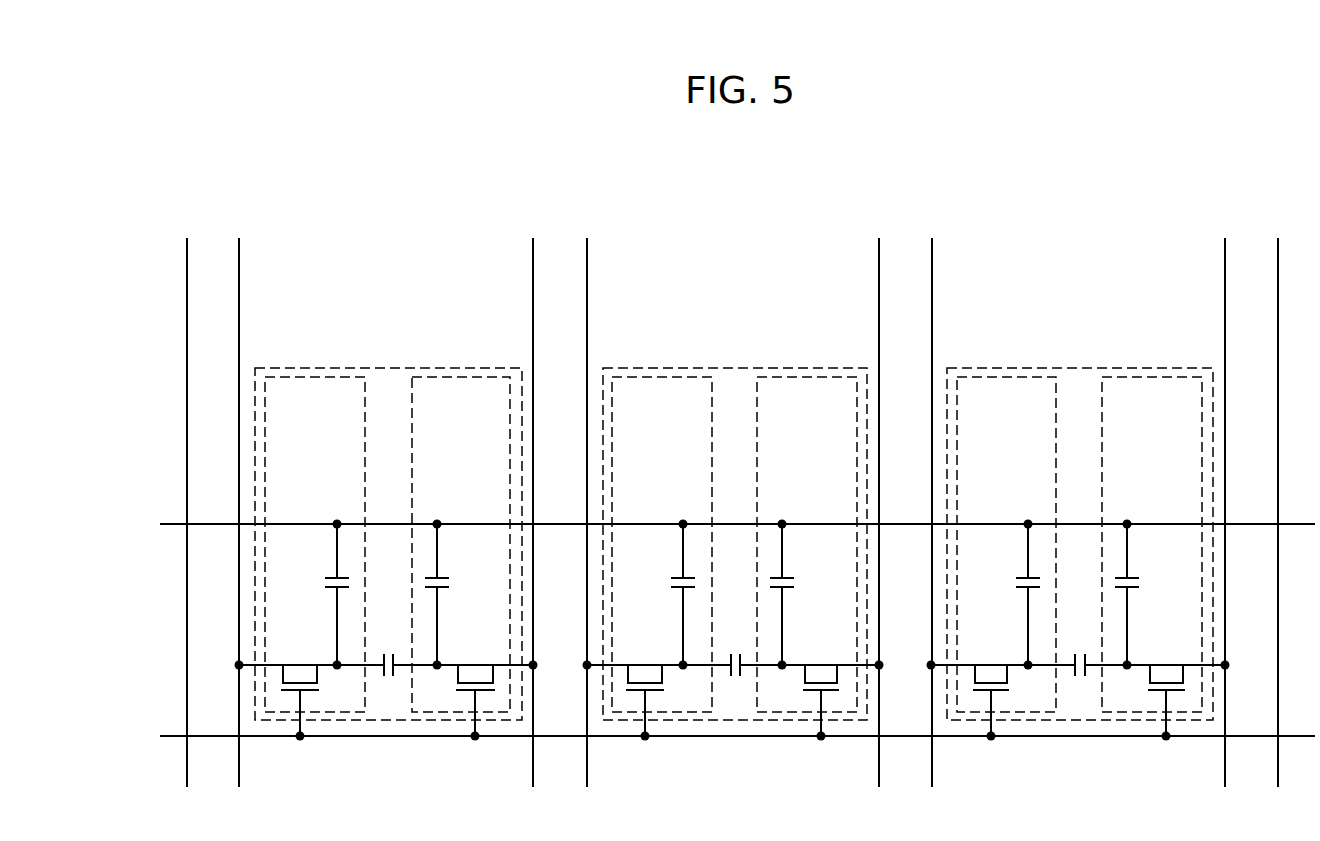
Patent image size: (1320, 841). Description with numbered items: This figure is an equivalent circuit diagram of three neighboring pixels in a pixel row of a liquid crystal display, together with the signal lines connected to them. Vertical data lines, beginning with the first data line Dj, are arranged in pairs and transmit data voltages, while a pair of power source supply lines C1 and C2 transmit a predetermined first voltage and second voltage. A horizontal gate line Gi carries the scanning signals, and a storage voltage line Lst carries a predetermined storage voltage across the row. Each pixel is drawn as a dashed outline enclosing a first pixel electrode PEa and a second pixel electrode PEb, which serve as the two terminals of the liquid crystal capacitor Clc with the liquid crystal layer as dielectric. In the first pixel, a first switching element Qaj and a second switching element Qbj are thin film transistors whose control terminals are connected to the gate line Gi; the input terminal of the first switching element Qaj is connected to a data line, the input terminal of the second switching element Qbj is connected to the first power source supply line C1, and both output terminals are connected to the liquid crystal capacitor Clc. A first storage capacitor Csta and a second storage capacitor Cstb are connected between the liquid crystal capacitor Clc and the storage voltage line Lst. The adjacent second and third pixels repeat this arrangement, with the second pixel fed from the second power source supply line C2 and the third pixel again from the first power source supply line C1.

The first data line Dj is at (187, 495).
The first power source supply line C1 is at (880, 495).
The second power source supply line C2 is at (932, 495).
The storage voltage line Lst is at (717, 526).
The gate line Gi is at (722, 737).
The first pixel electrode PEa is at (992, 377).
The second pixel electrode PEb is at (1164, 377).
The first storage capacitor Csta is at (661, 594).
The second storage capacitor Cstb is at (803, 594).
The liquid crystal capacitor Clc is at (735, 681).
The first switching element Qaj is at (300, 684).
The second switching element Qbj is at (475, 684).